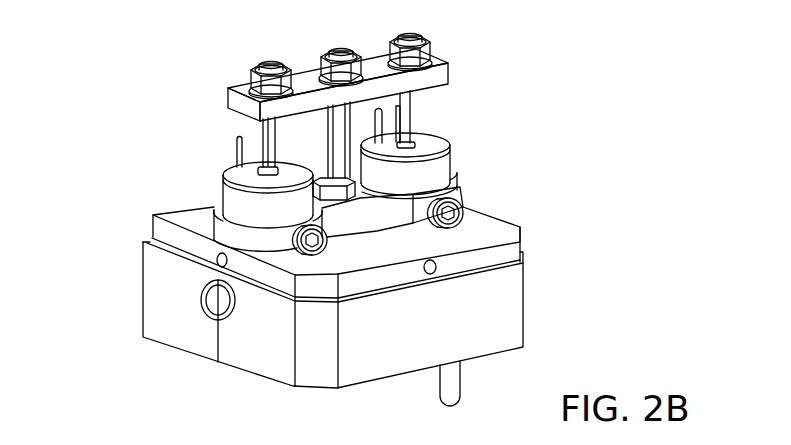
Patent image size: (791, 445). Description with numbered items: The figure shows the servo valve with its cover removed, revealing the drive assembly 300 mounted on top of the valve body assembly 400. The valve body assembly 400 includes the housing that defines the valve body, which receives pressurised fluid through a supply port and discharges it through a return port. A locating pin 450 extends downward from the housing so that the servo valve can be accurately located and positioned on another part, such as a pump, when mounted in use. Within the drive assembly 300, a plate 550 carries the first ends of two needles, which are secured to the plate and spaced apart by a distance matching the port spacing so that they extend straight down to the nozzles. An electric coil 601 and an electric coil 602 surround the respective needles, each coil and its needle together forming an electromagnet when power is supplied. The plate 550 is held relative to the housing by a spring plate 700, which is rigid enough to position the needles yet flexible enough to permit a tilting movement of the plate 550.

The drive assembly 300 is at (158, 62).
The plate 550 is at (449, 72).
The electric coil 602 is at (451, 140).
The electric coil 601 is at (224, 188).
The spring plate 700 is at (328, 130).
The valve body assembly 400 is at (143, 283).
The locating pin 450 is at (461, 388).